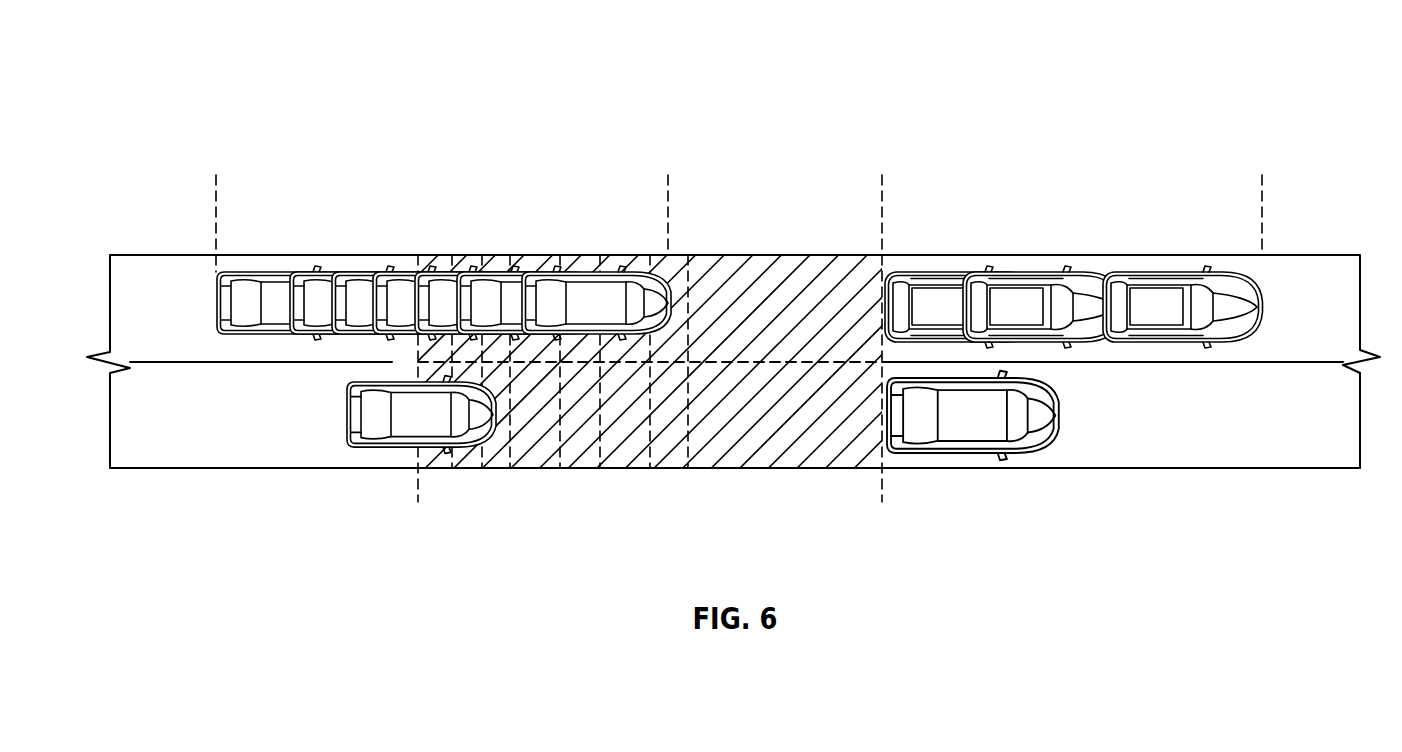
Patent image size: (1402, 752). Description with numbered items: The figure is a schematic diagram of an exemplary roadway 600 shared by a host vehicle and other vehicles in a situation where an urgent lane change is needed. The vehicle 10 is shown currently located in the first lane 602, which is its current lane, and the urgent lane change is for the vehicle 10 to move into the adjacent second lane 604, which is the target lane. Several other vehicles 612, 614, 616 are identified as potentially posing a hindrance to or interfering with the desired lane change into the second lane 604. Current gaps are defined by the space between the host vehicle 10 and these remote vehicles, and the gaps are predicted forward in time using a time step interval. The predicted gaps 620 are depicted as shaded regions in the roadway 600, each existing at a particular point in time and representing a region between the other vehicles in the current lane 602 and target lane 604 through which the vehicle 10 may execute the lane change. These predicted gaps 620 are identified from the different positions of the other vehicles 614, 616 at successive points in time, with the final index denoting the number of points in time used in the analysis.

The roadway 600 is at (169, 65).
The first lane 602 is at (185, 457).
The second lane 604 is at (185, 350).
The vehicle 10 is at (380, 448).
The other vehicle 612 is at (970, 453).
The other vehicle 614 is at (216, 175).
The other vehicle 616 is at (1262, 175).
The predicted gaps 620 is at (418, 502).